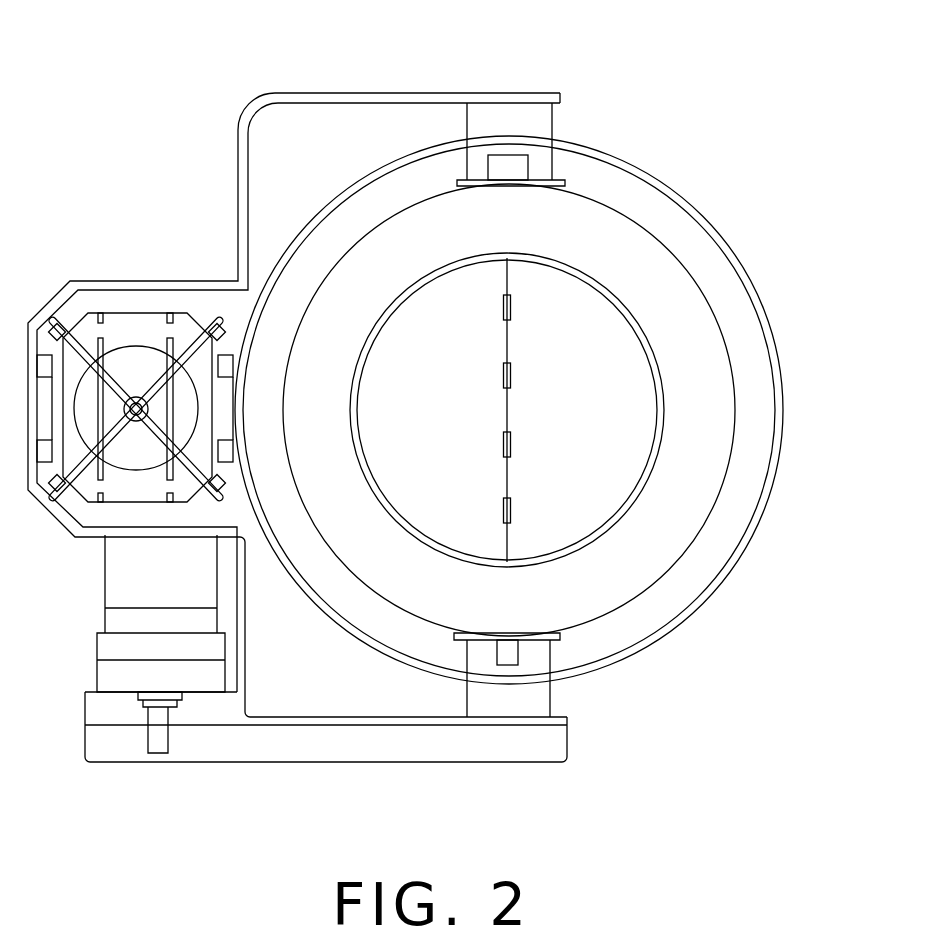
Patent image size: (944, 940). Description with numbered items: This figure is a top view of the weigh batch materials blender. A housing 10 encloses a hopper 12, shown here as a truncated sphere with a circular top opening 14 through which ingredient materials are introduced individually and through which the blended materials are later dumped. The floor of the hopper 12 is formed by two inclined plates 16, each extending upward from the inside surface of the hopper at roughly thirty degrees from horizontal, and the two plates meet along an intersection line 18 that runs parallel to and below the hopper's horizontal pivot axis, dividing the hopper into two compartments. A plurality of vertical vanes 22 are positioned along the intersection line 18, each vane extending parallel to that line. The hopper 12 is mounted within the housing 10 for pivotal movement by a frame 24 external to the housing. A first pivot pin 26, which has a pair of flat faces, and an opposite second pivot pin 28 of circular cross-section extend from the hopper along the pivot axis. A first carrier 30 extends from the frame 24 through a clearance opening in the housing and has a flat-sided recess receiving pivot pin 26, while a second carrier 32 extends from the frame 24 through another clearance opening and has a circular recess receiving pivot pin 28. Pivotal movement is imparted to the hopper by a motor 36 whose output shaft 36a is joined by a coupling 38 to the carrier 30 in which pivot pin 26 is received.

The housing 10 is at (752, 282).
The hopper 12 is at (667, 247).
The top opening 14 is at (660, 428).
The inclined plates 16 is at (423, 388).
The intersection line 18 is at (510, 332).
The vertical vanes 22 is at (503, 311).
The frame 24 is at (372, 93).
The first pivot pin 26 is at (510, 665).
The second pivot pin 28 is at (526, 168).
The first carrier 30 is at (463, 693).
The second carrier 32 is at (467, 133).
The motor 36 is at (107, 578).
The output shaft 36a is at (157, 763).
The coupling 38 is at (342, 762).